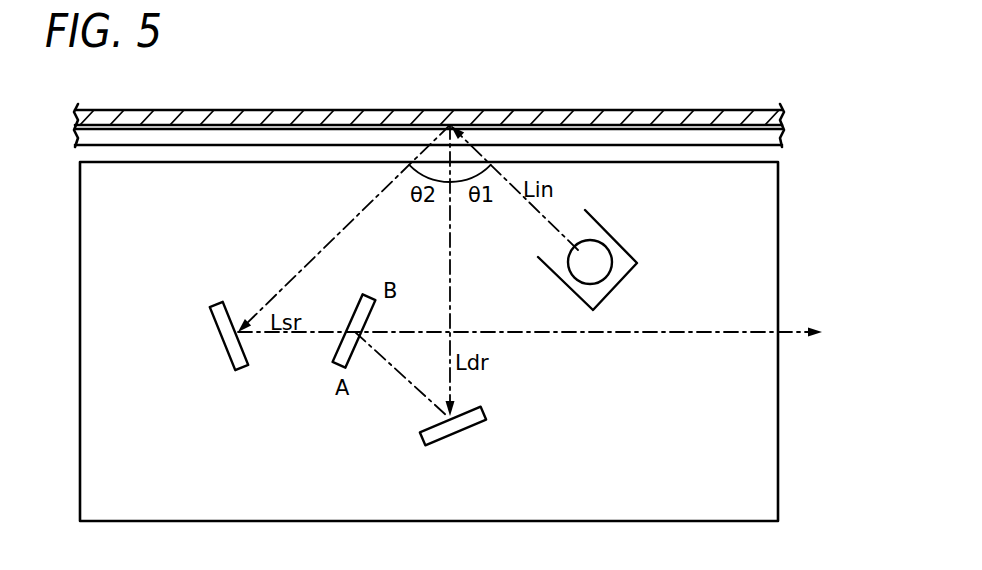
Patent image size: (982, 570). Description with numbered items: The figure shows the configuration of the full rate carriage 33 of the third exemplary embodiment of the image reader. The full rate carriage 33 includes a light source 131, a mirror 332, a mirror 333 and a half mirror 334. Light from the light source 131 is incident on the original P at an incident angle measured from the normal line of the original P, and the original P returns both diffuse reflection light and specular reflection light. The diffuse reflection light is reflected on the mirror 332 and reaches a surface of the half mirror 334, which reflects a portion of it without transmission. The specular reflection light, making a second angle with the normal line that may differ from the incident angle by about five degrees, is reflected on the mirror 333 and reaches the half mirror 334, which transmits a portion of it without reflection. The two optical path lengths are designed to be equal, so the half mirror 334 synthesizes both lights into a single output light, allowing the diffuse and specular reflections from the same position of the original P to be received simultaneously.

The original P is at (598, 108).
The full rate carriage 33 is at (800, 256).
The light source 131 is at (610, 233).
The mirror 332 is at (468, 425).
The mirror 333 is at (222, 330).
The half mirror 334 is at (368, 295).